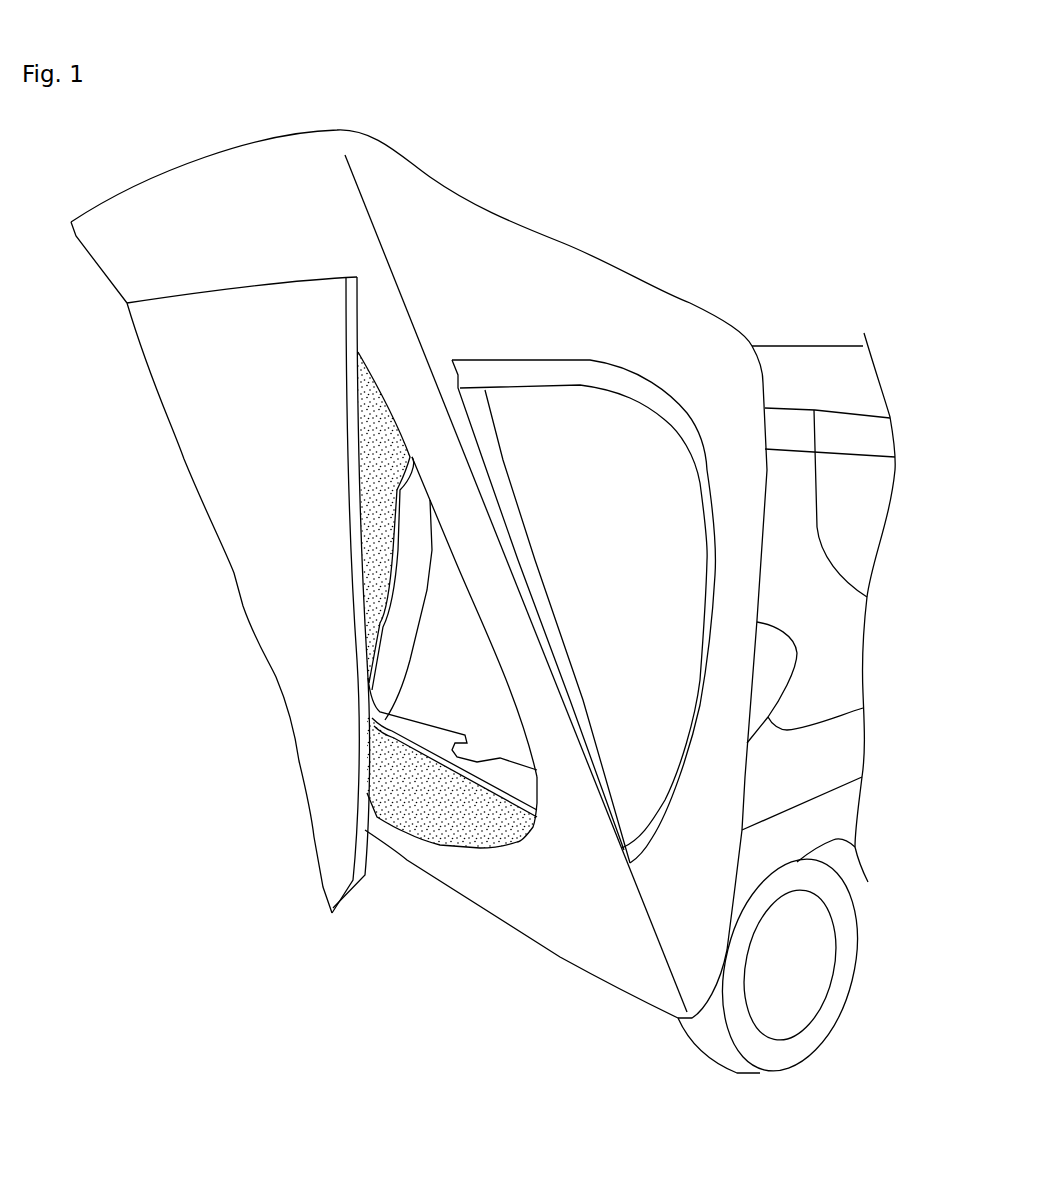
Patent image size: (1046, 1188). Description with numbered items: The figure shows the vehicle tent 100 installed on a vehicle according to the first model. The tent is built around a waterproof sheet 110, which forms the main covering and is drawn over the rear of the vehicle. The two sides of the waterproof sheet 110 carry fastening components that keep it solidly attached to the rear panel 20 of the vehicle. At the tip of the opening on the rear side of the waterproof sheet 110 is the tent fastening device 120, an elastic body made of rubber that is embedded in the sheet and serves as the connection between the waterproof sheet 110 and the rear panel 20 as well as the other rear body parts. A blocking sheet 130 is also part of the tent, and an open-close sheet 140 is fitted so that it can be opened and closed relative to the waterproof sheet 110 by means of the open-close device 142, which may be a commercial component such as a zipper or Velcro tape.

The vehicle tent 100 is at (680, 265).
The waterproof sheet 110 is at (553, 915).
The tent fastening device 120 is at (473, 803).
The blocking sheet 130 is at (393, 498).
The open-close sheet 140 is at (257, 590).
The open-close device 142 is at (357, 830).
The rear panel 20 is at (397, 707).